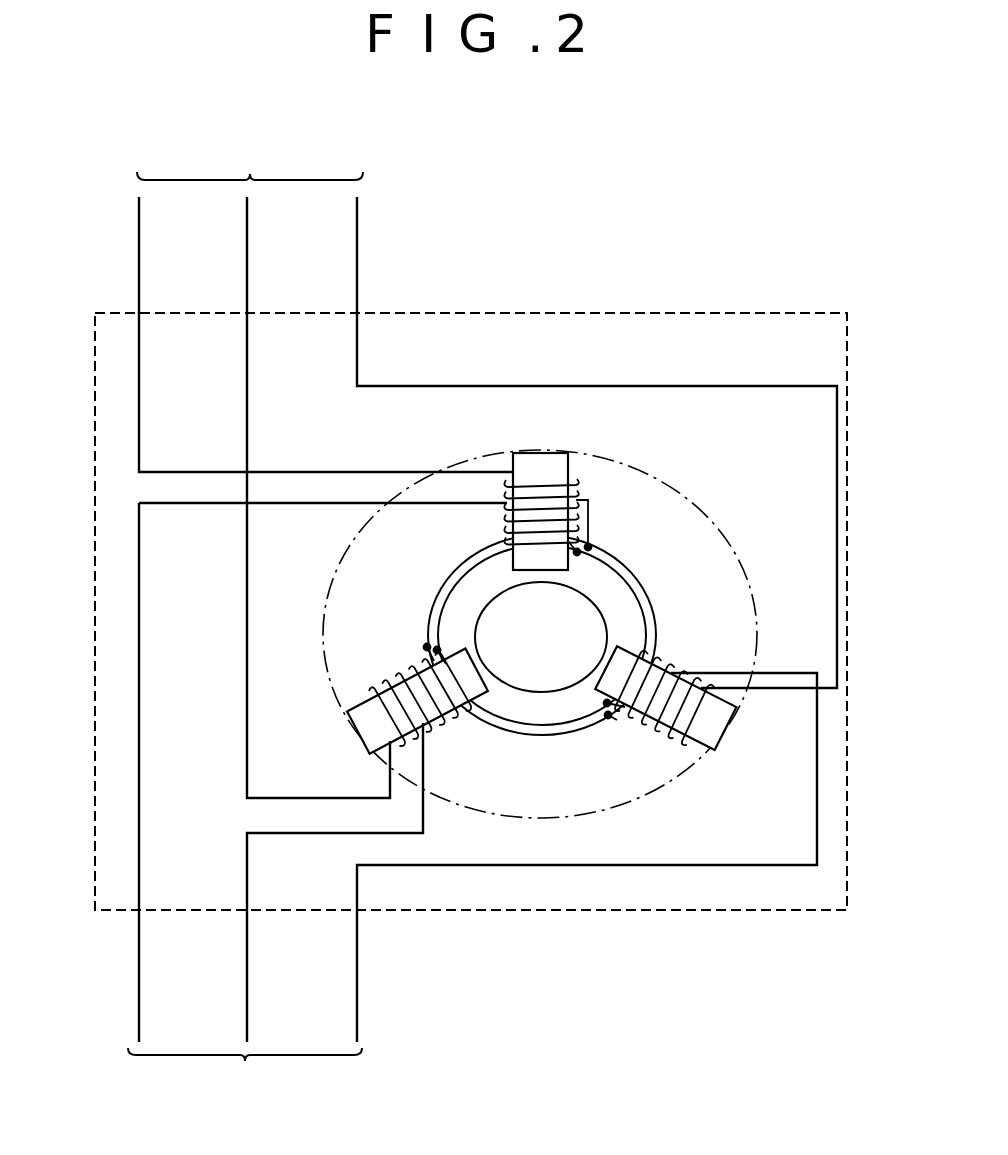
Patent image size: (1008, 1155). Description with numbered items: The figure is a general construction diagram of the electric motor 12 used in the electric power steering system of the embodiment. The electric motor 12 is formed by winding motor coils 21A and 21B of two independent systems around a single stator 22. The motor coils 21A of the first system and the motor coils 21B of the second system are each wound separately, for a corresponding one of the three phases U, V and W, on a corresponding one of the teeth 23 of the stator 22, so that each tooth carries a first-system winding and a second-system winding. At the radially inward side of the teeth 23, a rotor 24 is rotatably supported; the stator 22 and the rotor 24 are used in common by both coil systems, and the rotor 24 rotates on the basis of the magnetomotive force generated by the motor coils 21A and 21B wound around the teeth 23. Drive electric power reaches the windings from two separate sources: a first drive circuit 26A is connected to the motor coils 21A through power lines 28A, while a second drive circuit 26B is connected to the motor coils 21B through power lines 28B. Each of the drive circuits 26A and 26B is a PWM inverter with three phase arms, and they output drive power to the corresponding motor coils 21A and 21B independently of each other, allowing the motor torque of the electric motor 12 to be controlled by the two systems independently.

The electric motor 12 is at (715, 312).
The stator 22 is at (665, 485).
The teeth 23 is at (541, 462).
The rotor 24 is at (523, 651).
The motor coils 21A is at (574, 488).
The motor coils 21B is at (507, 523).
The power lines 28A is at (413, 278).
The power lines 28B is at (139, 932).
The drive circuit 26A is at (248, 161).
The drive circuit 26B is at (246, 1071).